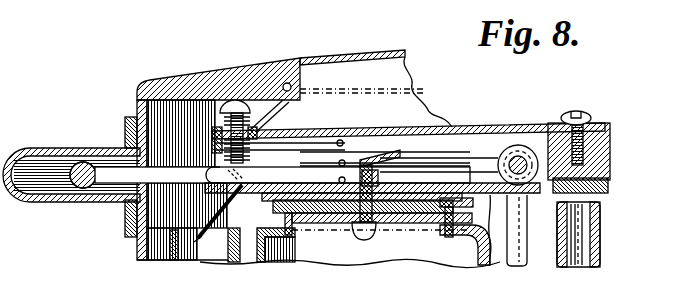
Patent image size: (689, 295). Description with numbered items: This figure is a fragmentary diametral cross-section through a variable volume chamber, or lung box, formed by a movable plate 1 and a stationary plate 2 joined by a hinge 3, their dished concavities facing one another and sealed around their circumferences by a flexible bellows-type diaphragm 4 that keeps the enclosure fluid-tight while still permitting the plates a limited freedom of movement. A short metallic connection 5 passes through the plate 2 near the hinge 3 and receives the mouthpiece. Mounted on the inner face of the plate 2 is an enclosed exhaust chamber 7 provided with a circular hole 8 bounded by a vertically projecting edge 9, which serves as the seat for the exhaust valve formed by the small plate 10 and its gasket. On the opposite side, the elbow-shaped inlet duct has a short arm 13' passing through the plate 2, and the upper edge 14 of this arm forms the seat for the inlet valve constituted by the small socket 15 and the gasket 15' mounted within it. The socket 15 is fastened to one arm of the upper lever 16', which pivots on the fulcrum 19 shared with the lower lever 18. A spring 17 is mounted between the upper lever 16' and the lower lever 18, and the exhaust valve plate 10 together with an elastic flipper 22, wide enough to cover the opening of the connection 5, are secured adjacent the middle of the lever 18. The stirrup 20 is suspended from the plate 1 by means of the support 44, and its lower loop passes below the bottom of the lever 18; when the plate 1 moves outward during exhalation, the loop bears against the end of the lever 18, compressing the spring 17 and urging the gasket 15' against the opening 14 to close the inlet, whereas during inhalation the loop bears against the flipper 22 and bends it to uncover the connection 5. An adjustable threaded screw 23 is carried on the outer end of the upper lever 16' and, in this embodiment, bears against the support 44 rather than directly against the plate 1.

The plate 1 is at (365, 52).
The plate 2 is at (135, 250).
The hinge 3 is at (85, 148).
The diaphragm 4 is at (43, 148).
The connection 5 is at (162, 252).
The exhaust chamber 7 is at (470, 256).
The circular hole 8 is at (422, 231).
The vertically projecting edge 9 is at (490, 266).
The small plate 10 is at (353, 232).
The short arm 13' is at (612, 234).
The upper edge 14 is at (601, 208).
The small socket 15 is at (599, 145).
The gasket 15' is at (604, 183).
The upper lever 16' is at (408, 115).
The spring 17 is at (355, 150).
The lever 18 is at (537, 198).
The fulcrum 19 is at (522, 146).
The stirrup 20 is at (276, 117).
The flipper 22 is at (200, 244).
The threaded screw 23 is at (232, 100).
The support 44 is at (253, 72).